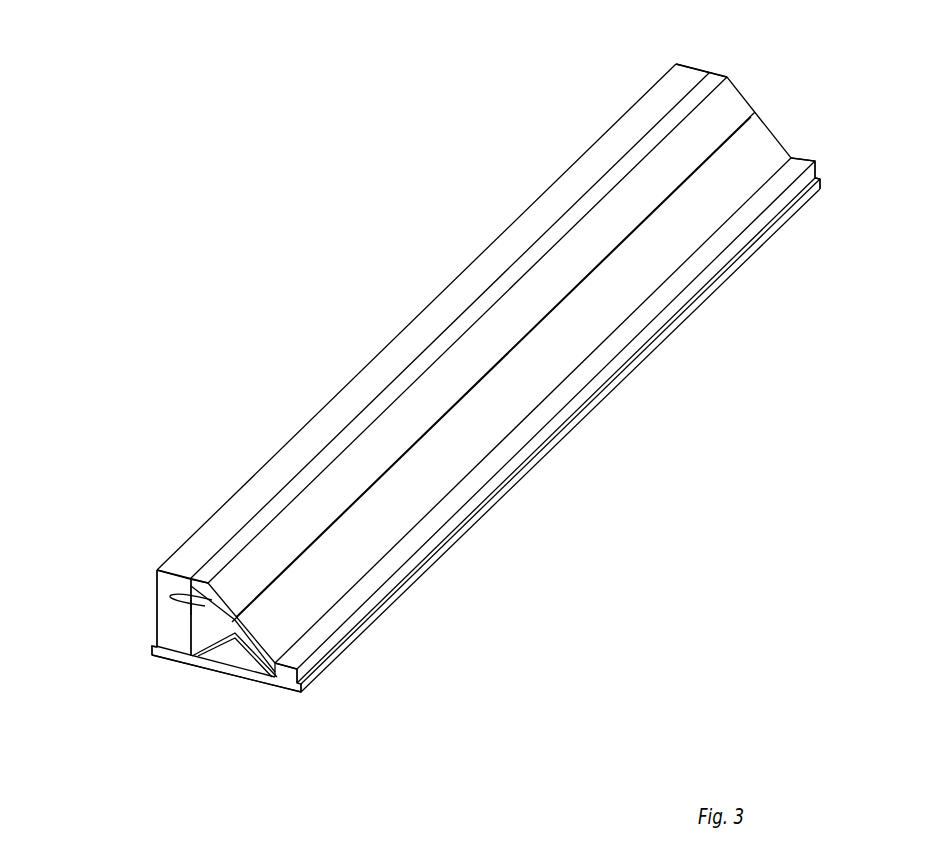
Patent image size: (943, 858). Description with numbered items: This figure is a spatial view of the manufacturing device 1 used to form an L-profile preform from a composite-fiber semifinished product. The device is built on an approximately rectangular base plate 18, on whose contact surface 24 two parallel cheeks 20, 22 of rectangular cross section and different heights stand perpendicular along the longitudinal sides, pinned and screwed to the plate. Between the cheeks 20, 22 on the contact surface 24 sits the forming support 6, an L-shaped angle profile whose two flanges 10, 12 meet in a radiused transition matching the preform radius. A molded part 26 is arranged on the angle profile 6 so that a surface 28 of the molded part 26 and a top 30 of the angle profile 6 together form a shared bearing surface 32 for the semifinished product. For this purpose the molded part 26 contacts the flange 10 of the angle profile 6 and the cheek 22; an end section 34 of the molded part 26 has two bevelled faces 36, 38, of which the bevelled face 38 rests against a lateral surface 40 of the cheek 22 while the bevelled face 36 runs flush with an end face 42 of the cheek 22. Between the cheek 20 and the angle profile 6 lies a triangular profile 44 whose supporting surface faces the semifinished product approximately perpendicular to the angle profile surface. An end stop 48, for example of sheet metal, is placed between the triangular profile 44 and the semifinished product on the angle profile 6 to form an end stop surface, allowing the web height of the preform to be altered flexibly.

The manufacturing device 1 is at (282, 64).
The forming support 6 is at (500, 397).
The flange 10 is at (156, 646).
The flange 12 is at (233, 653).
The base plate 18 is at (740, 263).
The cheek 20 is at (665, 318).
The cheek 22 is at (352, 385).
The contact surface 24 is at (193, 653).
The molded part 26 is at (198, 617).
The surface 28 is at (295, 517).
The top 30 is at (365, 530).
The shared bearing surface 32 is at (665, 248).
The end section 34 is at (152, 595).
The bevelled face 36 is at (253, 530).
The bevelled face 38 is at (191, 607).
The lateral surface 40 is at (195, 640).
The end face 42 is at (330, 424).
The triangular profile 44 is at (258, 657).
The end stop 48 is at (637, 325).